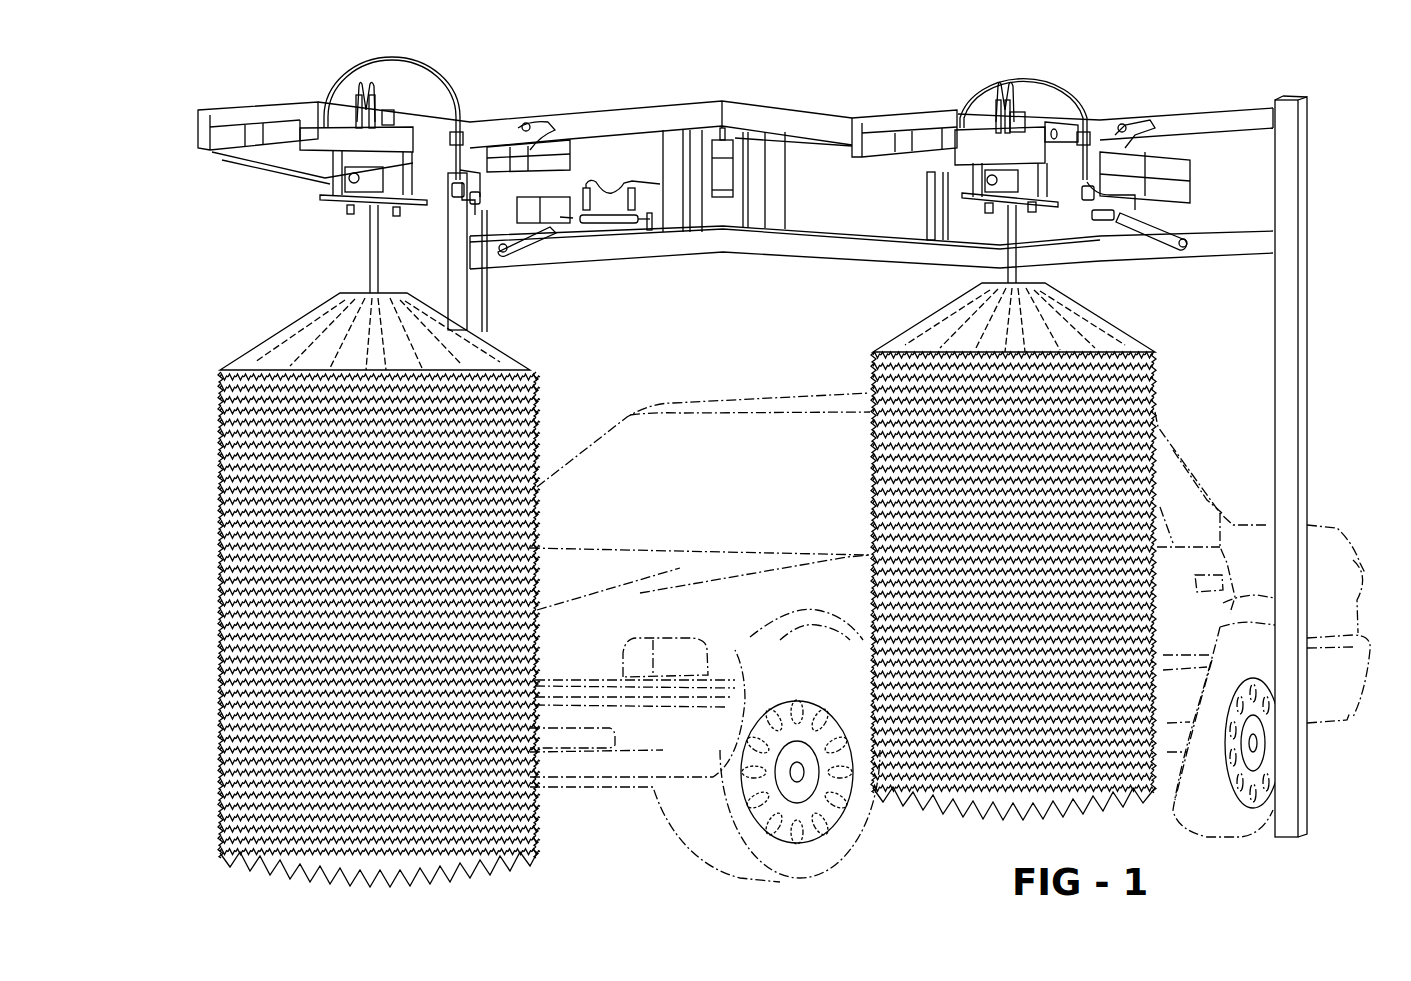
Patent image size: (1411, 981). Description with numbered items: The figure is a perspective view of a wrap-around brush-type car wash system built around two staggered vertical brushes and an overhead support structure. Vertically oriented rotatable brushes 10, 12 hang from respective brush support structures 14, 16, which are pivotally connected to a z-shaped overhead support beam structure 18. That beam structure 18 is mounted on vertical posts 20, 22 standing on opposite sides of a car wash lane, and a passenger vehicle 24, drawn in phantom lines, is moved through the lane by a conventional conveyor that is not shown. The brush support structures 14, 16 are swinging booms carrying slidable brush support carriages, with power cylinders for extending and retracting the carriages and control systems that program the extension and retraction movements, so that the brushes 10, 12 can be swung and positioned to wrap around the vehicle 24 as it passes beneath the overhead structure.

The rotatable brush 10 is at (220, 440).
The rotatable brush 12 is at (1160, 403).
The brush support structure 14 is at (287, 123).
The brush support structure 16 is at (903, 110).
The overhead support beam structure 18 is at (1227, 118).
The vertical post 20 is at (482, 328).
The vertical post 22 is at (1307, 375).
The passenger vehicle 24 is at (1357, 518).